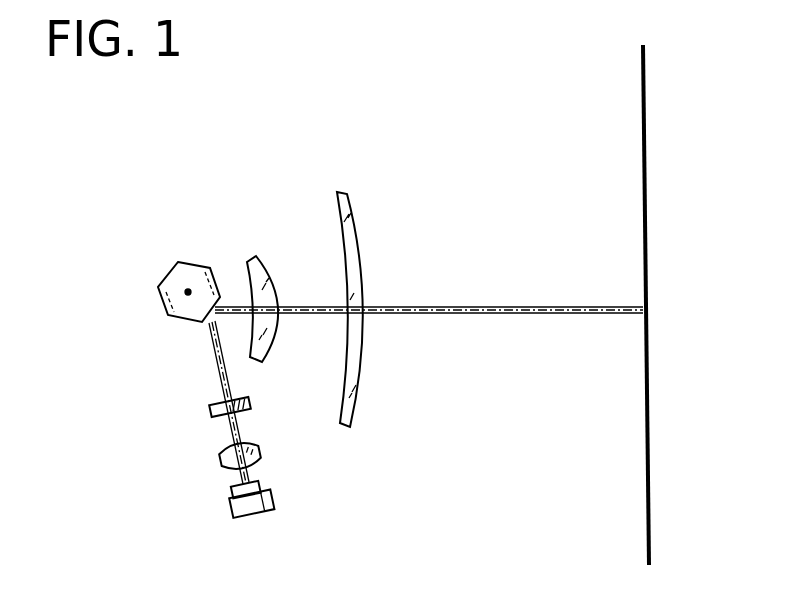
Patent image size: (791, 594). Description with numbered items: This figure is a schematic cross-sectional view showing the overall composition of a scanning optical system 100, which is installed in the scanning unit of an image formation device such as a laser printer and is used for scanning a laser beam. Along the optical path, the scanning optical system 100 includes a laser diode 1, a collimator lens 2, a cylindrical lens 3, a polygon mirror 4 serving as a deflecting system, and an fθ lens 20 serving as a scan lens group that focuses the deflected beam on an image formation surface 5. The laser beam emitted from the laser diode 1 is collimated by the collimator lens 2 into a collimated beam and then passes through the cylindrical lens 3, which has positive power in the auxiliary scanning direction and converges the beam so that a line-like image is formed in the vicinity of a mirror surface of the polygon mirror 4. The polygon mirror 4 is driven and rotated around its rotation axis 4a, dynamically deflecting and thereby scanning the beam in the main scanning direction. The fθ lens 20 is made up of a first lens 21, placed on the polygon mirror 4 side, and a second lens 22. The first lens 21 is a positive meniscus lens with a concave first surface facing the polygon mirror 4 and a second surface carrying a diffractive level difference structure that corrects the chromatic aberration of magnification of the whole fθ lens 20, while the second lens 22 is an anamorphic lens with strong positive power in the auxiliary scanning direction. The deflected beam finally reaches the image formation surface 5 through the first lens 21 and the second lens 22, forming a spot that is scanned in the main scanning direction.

The laser diode 1 is at (232, 507).
The collimator lens 2 is at (222, 458).
The cylindrical lens 3 is at (212, 410).
The polygon mirror 4 is at (188, 262).
The rotation axis 4a is at (186, 290).
The image formation surface 5 is at (644, 83).
The fθ lens 20 is at (288, 259).
The first lens 21 is at (250, 258).
The second lens 22 is at (342, 280).
The scanning optical system 100 is at (353, 504).